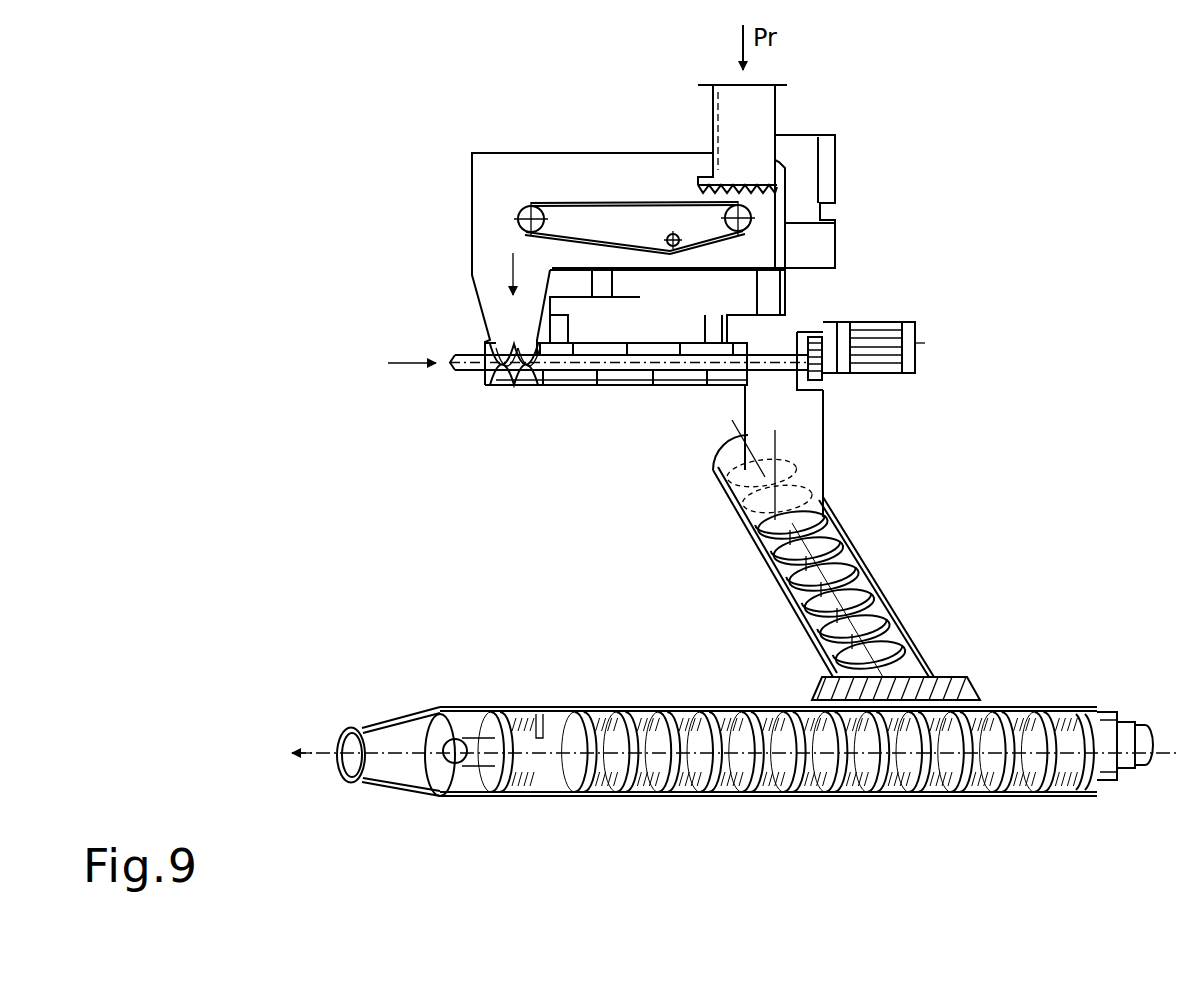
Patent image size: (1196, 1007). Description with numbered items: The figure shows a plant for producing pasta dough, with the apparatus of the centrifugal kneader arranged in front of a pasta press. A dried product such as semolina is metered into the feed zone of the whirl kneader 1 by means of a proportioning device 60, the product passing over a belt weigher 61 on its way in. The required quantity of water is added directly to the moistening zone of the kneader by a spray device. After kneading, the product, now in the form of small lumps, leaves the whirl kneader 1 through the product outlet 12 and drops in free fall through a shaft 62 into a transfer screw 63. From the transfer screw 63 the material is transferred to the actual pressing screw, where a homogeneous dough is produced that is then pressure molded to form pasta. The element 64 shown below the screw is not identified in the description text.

The whirl kneader 1 is at (604, 410).
The product outlet 12 is at (812, 408).
The proportioning device 60 is at (838, 158).
The belt weigher 61 is at (613, 195).
The shaft 62 is at (815, 482).
The transfer screw 63 is at (887, 667).
The horizontal screw conveyor 64 is at (813, 793).